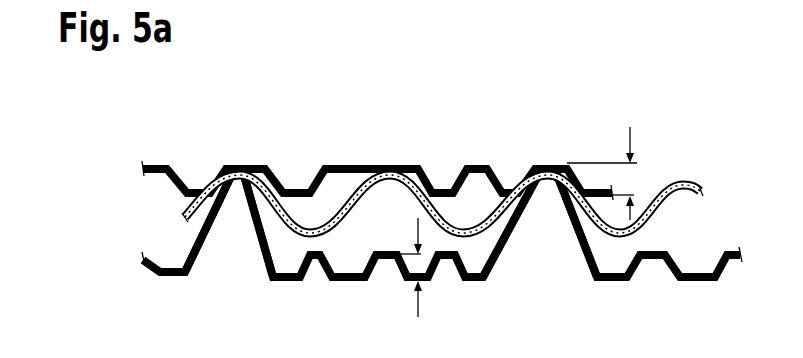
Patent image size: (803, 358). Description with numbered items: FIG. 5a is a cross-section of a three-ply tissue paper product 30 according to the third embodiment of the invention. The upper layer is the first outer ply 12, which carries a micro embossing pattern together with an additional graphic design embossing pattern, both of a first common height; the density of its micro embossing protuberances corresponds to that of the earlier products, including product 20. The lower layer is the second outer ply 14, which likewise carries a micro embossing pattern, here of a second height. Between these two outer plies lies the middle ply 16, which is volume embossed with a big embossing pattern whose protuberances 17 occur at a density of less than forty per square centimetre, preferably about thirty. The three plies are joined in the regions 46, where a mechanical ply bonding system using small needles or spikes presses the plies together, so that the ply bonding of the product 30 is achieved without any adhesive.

The product 30 is at (386, 216).
The first outer ply 12 is at (161, 162).
The second outer ply 14 is at (352, 288).
The product 20 is at (367, 162).
The protuberances 17 is at (463, 230).
The middle ply 16 is at (290, 242).
The regions 46 is at (250, 222).